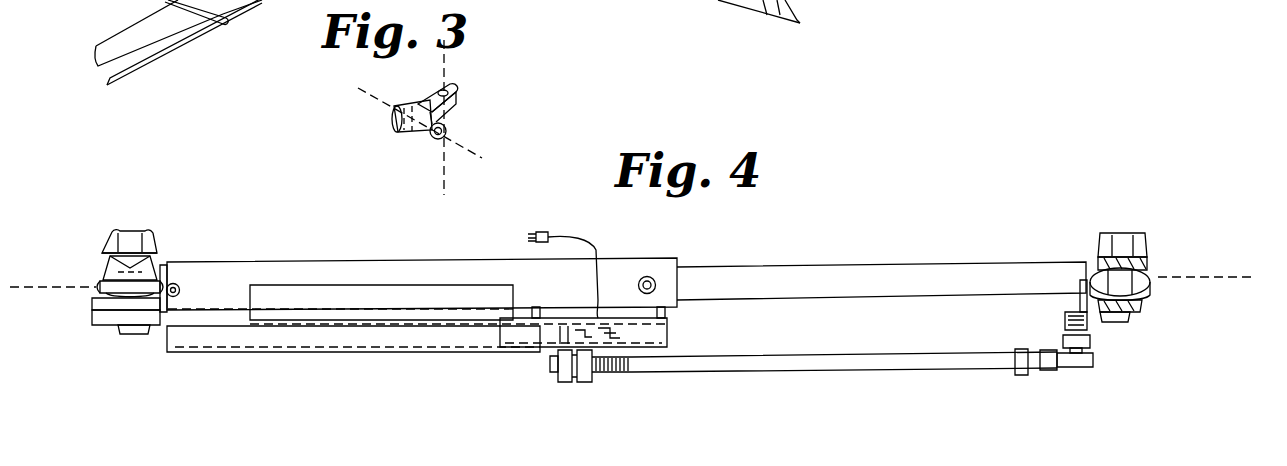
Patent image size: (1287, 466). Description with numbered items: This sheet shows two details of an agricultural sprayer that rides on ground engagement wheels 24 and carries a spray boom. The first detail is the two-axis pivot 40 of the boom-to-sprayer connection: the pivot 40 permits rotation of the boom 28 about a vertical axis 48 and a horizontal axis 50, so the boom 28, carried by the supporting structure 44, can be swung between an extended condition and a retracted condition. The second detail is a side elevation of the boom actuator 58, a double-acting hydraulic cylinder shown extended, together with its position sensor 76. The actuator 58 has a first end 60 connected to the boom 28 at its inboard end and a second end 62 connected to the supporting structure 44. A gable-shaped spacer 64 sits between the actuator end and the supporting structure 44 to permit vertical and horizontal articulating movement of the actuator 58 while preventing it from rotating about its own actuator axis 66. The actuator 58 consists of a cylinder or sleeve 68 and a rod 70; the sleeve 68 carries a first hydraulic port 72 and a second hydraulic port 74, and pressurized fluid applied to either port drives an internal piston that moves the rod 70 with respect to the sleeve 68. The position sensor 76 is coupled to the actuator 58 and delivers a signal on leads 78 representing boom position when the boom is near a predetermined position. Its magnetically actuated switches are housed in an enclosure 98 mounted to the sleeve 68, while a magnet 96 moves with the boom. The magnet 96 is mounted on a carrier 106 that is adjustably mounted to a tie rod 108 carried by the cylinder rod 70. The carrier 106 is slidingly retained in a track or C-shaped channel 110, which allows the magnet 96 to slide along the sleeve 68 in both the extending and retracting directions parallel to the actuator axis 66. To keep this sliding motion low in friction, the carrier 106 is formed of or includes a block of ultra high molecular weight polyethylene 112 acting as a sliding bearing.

In FIG. 3, the ground engagement wheels 24 is at (790, 15).
In FIG. 3, the pivot 40 is at (460, 124).
In FIG. 3, the vertical axis 48 is at (446, 164).
In FIG. 3, the horizontal axis 50 is at (493, 148).
In FIG. 4, the boom 28 is at (1143, 240).
In FIG. 4, the supporting structure 44 is at (148, 232).
In FIG. 4, the boom actuator 58 is at (393, 260).
In FIG. 4, the first end 60 is at (1150, 269).
In FIG. 4, the second end 62 is at (103, 283).
In FIG. 4, the gable-shaped spacer 64 is at (166, 283).
In FIG. 4, the actuator axis 66 is at (52, 289).
In FIG. 4, the cylinder or sleeve 68 is at (427, 262).
In FIG. 4, the rod 70 is at (827, 265).
In FIG. 4, the first hydraulic port 72 is at (182, 289).
In FIG. 4, the second hydraulic port 74 is at (643, 276).
In FIG. 4, the position sensor 76 is at (548, 378).
In FIG. 4, the leads 78 is at (596, 246).
In FIG. 4, the magnet 96 is at (645, 345).
In FIG. 4, the enclosure 98 is at (665, 309).
In FIG. 4, the carrier 106 is at (577, 382).
In FIG. 4, the tie rod 108 is at (877, 357).
In FIG. 4, the track or C-shaped channel 110 is at (423, 353).
In FIG. 4, the block of ultra high molecular weight polyethylene 112 is at (542, 345).